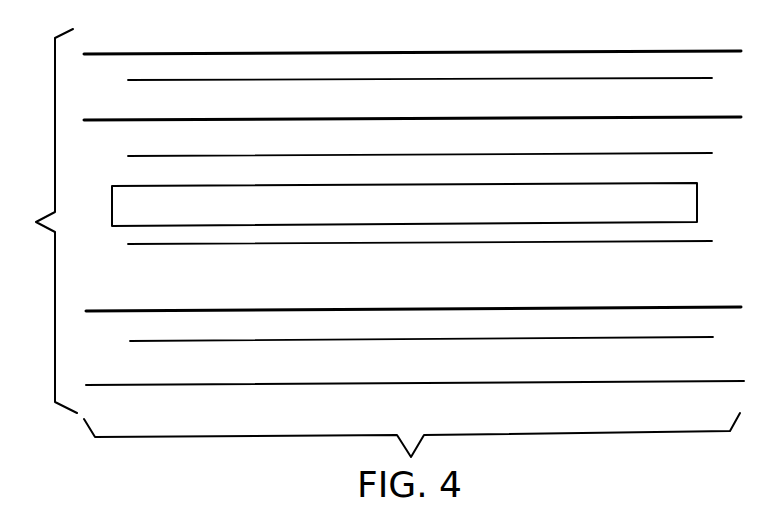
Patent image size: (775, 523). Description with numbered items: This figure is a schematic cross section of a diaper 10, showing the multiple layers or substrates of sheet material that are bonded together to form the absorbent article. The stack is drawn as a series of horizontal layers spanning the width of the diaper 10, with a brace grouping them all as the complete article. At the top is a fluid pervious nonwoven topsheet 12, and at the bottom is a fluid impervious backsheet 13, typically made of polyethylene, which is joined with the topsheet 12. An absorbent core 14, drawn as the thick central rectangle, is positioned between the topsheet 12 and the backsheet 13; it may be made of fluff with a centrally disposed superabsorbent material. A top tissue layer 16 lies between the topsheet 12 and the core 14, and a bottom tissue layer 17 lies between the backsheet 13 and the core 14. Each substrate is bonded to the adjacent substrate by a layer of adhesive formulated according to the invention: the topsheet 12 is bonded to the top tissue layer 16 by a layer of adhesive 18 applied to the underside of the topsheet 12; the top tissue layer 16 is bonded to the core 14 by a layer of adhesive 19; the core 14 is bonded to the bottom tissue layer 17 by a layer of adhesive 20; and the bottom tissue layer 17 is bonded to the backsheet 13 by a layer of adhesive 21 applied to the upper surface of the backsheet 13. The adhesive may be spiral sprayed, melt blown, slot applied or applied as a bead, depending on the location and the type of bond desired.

The diaper 10 is at (43, 221).
The fluid pervious nonwoven topsheet 12 is at (575, 52).
The fluid impervious backsheet 13 is at (253, 386).
The absorbent core 14 is at (402, 185).
The top tissue layer 16 is at (410, 119).
The bottom tissue layer 17 is at (250, 311).
The layer of adhesive 18 is at (272, 80).
The layer of adhesive 19 is at (273, 155).
The layer of adhesive 20 is at (566, 242).
The layer of adhesive 21 is at (420, 340).